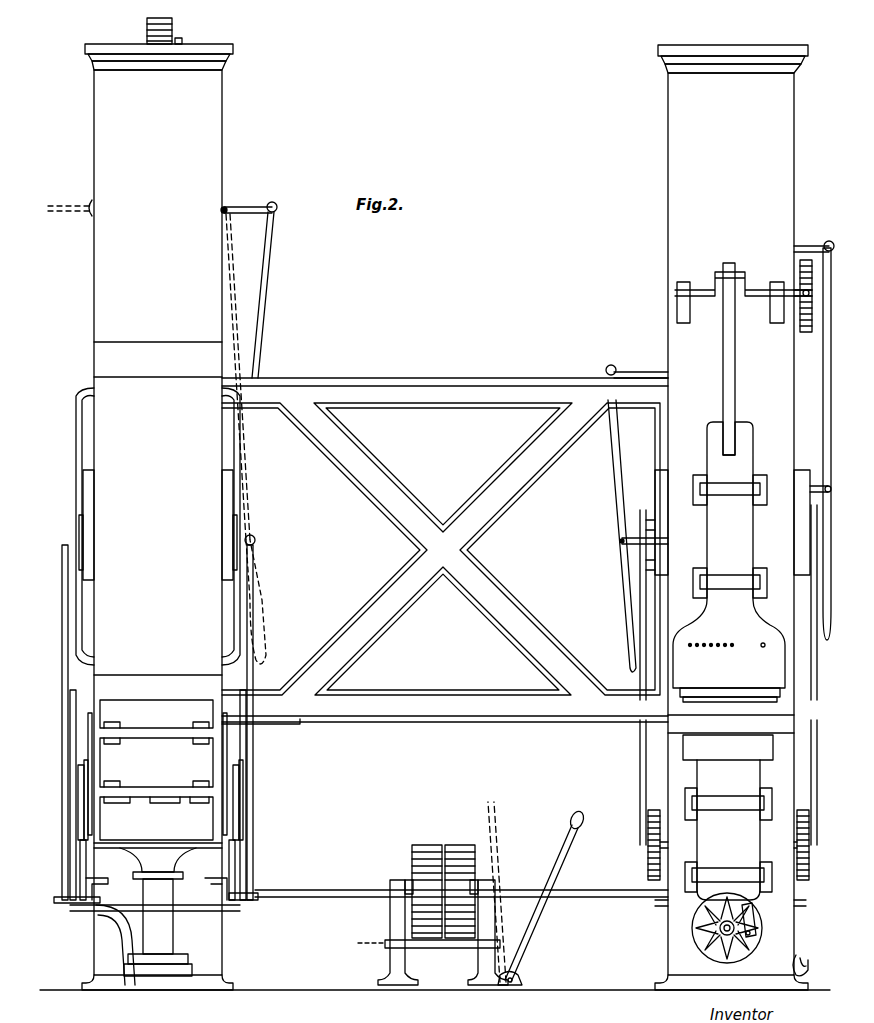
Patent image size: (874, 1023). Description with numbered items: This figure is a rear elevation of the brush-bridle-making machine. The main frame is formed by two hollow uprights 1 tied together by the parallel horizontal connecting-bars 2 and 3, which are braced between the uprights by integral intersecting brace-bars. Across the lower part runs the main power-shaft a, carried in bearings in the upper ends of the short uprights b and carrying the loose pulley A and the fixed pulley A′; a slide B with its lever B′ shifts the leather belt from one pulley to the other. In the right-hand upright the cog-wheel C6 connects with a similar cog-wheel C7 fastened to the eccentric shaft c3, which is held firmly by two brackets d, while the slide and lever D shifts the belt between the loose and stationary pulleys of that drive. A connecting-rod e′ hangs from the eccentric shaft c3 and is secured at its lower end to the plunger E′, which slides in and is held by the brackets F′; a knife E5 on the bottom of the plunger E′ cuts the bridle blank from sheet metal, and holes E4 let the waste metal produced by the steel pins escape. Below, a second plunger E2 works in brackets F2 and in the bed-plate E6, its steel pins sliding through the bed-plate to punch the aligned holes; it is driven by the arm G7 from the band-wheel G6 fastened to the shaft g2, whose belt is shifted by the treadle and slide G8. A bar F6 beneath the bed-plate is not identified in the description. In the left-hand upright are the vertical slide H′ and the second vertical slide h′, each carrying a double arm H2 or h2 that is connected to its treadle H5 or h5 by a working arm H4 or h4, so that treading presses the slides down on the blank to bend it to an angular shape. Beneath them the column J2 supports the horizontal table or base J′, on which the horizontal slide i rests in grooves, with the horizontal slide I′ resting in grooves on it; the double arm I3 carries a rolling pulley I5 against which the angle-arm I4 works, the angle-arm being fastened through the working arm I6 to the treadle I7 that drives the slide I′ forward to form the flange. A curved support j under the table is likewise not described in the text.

The hollow uprights 1 is at (428, 504).
The parallel horizontal connecting-bar 2 is at (445, 391).
The parallel horizontal connecting-bar 3 is at (445, 711).
The vertical slide H′ is at (158, 359).
The second vertical slide h′ is at (158, 571).
The double arm h2 is at (74, 410).
The double arm H2 is at (88, 472).
The working arm h4 is at (62, 586).
The working arm H4 is at (80, 683).
The treadle h5 is at (266, 910).
The treadle H5 is at (88, 920).
The horizontal slide I′ is at (156, 714).
The horizontal slide i is at (156, 762).
The horizontal table or base J′ is at (156, 818).
The column J2 is at (158, 912).
The curved support arm j is at (100, 955).
The double arm I3 is at (88, 730).
The angle-arm I4 is at (80, 820).
The rolling pulley I5 is at (78, 770).
The working arm I6 is at (80, 865).
The treadle I7 is at (72, 912).
The main power-shaft a is at (461, 886).
The loose pulley A is at (428, 852).
The fixed pulley A′ is at (458, 852).
The slide B is at (429, 950).
The short uprights b is at (395, 957).
The lever B′ is at (542, 893).
The eccentric shaft c3 is at (716, 290).
The brackets d is at (677, 312).
The cog-wheel C6 is at (806, 264).
The cog-wheel C7 is at (806, 332).
The connecting-rod e′ is at (735, 386).
The slide and lever D is at (820, 440).
The plunger E′ is at (729, 555).
The brackets F′ is at (740, 488).
The holes E4 is at (692, 642).
The knife E5 is at (730, 699).
The bed-plate E6 is at (730, 701).
The cross bar F6 is at (731, 723).
The plunger E2 is at (728, 817).
The brackets F2 is at (698, 810).
The shaft g2 is at (720, 928).
The band-wheel G6 is at (697, 944).
The arm G7 is at (752, 918).
The treadle and slide G8 is at (812, 965).